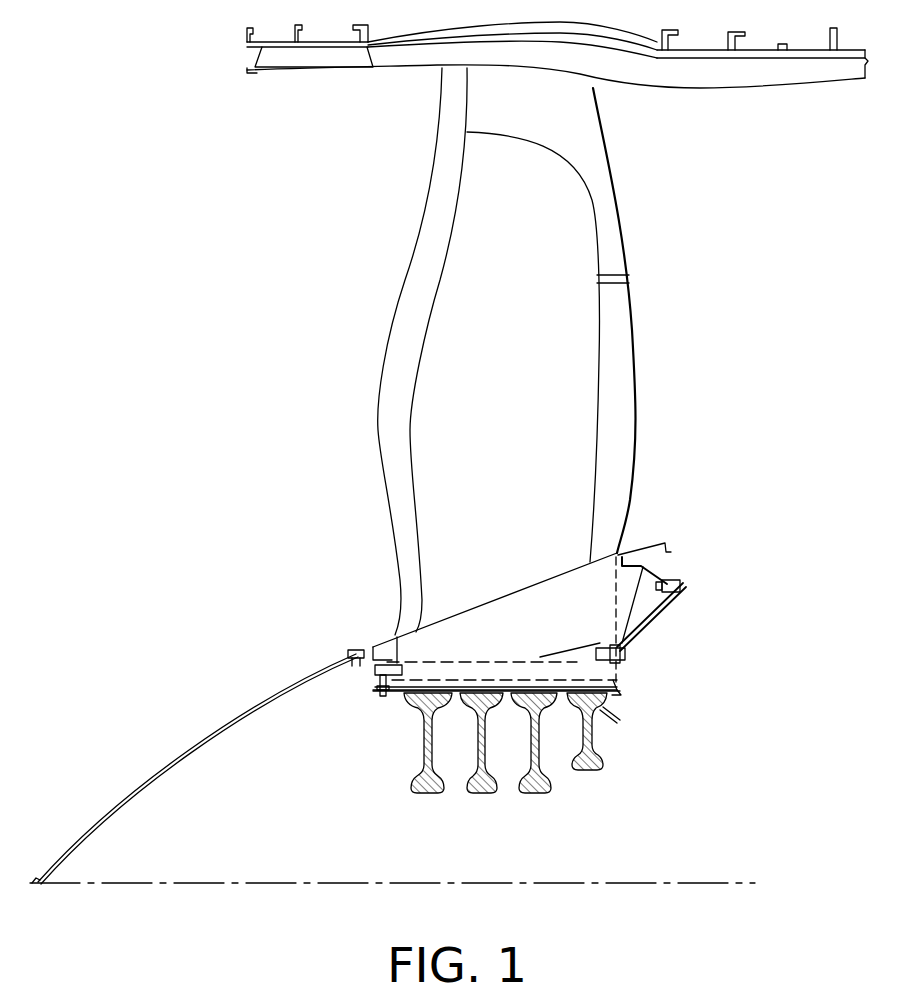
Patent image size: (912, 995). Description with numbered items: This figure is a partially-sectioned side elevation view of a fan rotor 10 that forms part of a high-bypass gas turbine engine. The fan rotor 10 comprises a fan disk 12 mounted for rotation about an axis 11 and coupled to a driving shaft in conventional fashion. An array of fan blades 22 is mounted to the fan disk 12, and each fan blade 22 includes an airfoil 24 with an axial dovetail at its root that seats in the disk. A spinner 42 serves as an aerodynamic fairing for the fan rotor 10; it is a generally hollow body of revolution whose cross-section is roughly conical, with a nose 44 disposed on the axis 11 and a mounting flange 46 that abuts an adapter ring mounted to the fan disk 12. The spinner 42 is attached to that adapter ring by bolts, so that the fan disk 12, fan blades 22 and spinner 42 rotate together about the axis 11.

The fan rotor 10 is at (368, 612).
The axis 11 is at (285, 883).
The fan disk 12 is at (585, 766).
The fan blade 22 is at (610, 195).
The airfoil 24 is at (511, 328).
The spinner 42 is at (200, 726).
The nose 44 is at (38, 881).
The mounting flange 46 is at (357, 650).